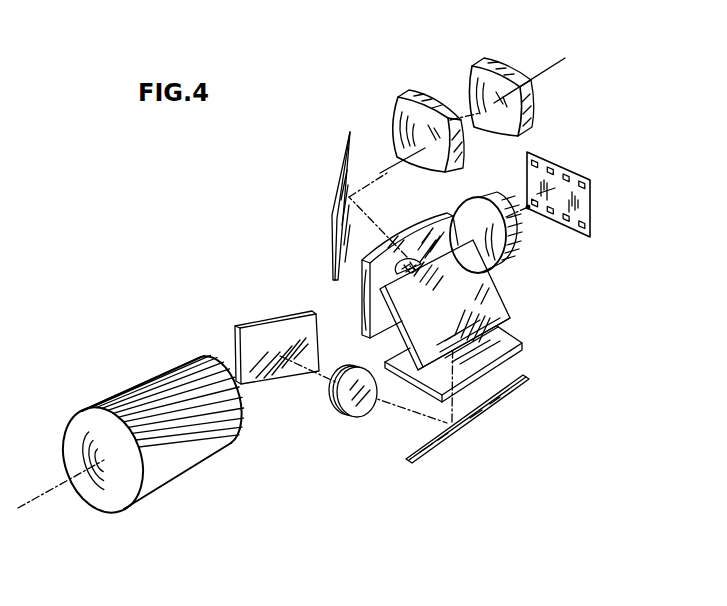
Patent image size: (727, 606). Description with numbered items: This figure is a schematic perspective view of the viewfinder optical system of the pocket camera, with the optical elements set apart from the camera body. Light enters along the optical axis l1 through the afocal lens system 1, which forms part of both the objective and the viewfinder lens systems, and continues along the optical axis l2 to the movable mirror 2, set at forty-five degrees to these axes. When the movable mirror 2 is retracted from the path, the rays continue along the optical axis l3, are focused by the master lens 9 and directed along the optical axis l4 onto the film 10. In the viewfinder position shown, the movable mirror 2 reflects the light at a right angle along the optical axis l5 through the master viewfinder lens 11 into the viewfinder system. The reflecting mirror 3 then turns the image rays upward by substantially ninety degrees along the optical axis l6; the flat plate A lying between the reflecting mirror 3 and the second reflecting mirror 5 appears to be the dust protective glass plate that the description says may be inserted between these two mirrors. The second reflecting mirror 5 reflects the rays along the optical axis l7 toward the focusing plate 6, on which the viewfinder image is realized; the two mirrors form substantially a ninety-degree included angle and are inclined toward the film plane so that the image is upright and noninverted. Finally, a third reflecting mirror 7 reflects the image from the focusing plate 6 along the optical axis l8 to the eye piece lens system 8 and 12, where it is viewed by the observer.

The afocal lens system 1 is at (187, 472).
The movable mirror 2 is at (254, 323).
The reflecting mirror 3 is at (478, 421).
The second reflecting mirror 5 is at (511, 312).
The focusing plate 6 is at (356, 346).
The third reflecting mirror 7 is at (338, 180).
The eye piece lens system 8 is at (407, 97).
The master lens 9 is at (520, 256).
The film 10 is at (590, 200).
The master viewfinder lens 11 is at (343, 416).
The eye piece lens system 12 is at (513, 60).
The base plate A is at (520, 341).
The optical axis l1 is at (43, 498).
The optical axis l2 is at (232, 375).
The optical axis l3 is at (333, 327).
The optical axis l4 is at (530, 209).
The optical axis l5 is at (397, 417).
The optical axis l6 is at (490, 388).
The optical axis l7 is at (370, 217).
The optical axis l8 is at (388, 157).